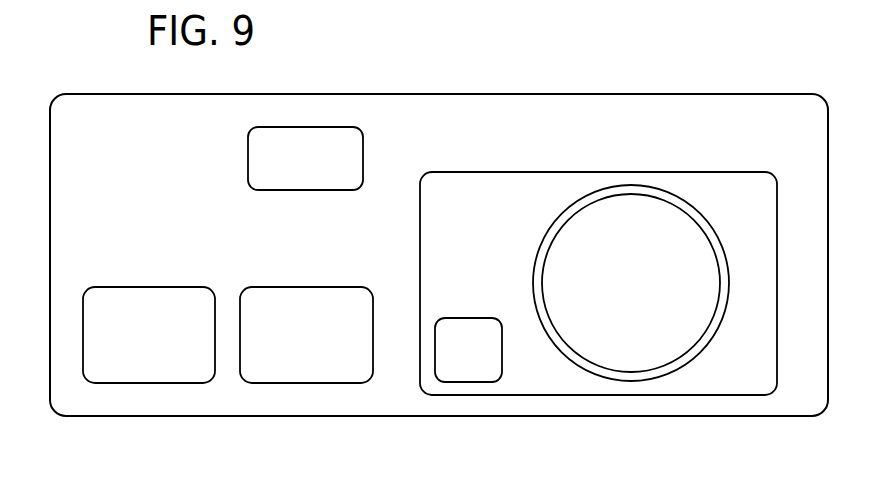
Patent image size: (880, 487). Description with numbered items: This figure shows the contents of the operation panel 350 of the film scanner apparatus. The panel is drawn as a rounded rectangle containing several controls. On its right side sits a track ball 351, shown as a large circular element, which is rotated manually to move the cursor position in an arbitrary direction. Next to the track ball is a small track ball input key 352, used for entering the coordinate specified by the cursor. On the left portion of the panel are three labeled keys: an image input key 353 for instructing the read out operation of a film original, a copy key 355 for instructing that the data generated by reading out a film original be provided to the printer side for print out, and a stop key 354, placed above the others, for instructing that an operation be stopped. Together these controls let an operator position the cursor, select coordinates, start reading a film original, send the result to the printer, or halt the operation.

The operation panel 350 is at (140, 430).
The track ball 351 is at (540, 248).
The track ball input key 352 is at (452, 318).
The image input key 353 is at (185, 287).
The stop key 354 is at (248, 165).
The copy key 355 is at (322, 287).